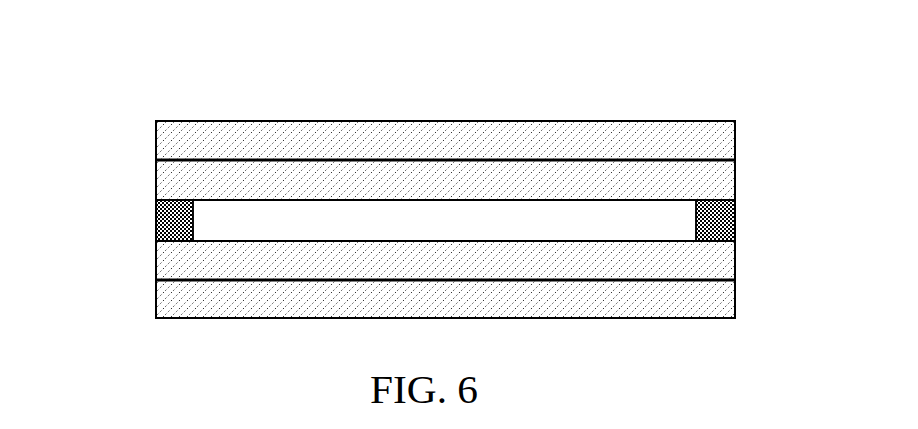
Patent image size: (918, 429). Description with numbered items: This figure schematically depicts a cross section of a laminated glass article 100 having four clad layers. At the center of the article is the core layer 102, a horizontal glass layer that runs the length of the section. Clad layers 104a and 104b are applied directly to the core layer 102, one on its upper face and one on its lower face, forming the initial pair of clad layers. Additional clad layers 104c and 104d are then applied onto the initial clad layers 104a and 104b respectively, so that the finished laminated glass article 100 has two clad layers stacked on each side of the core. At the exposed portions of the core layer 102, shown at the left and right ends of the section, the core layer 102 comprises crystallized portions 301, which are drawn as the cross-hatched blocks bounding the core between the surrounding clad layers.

The laminated glass article 100 is at (740, 115).
The core layer 102 is at (300, 223).
The clad layer 104a is at (733, 187).
The clad layer 104b is at (720, 260).
The clad layer 104c is at (173, 140).
The clad layer 104d is at (162, 298).
The crystallized portions 301 is at (155, 225).